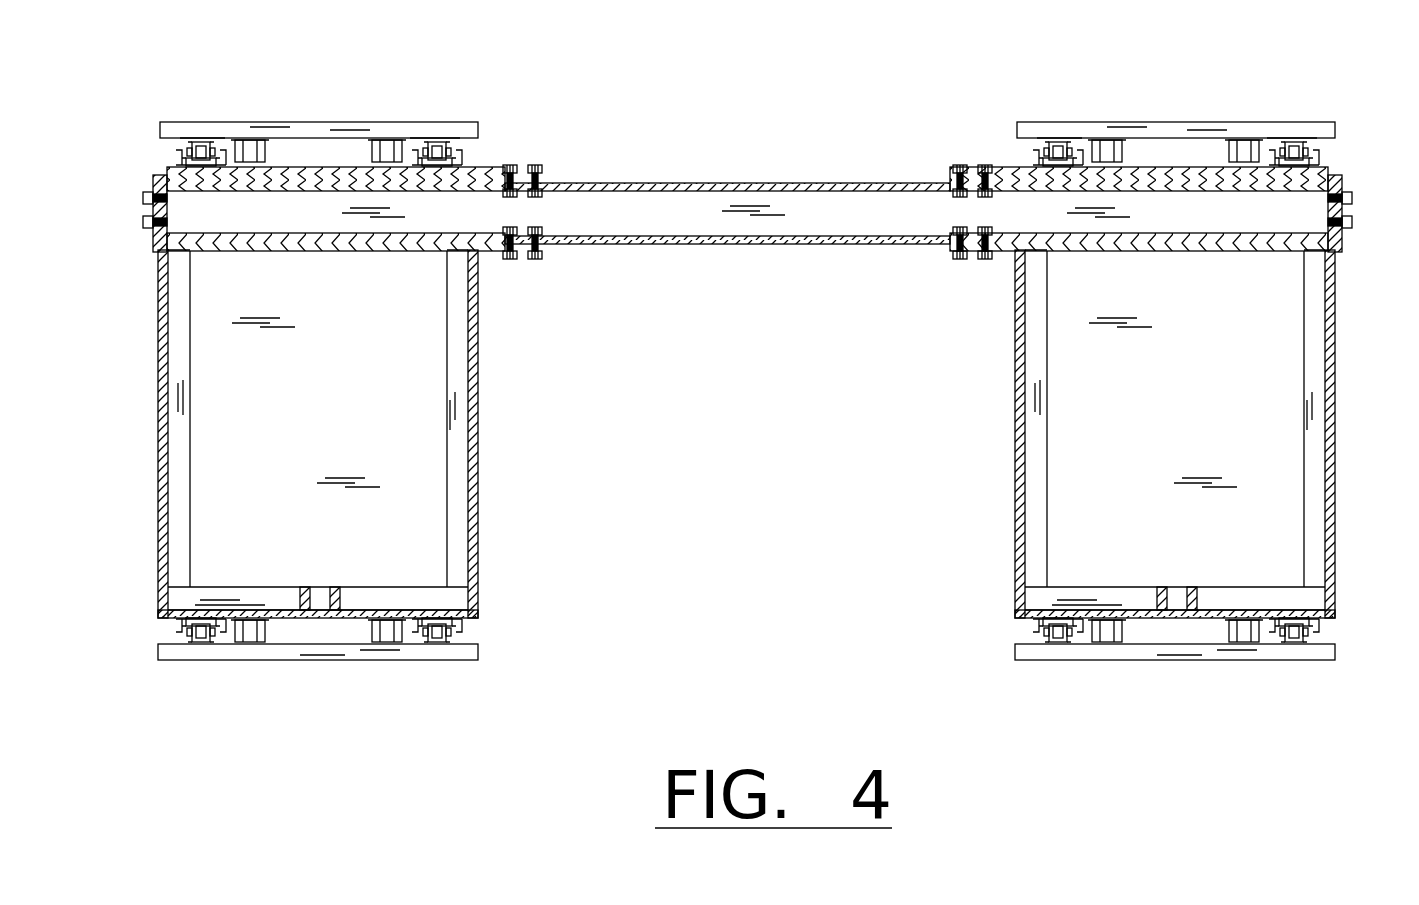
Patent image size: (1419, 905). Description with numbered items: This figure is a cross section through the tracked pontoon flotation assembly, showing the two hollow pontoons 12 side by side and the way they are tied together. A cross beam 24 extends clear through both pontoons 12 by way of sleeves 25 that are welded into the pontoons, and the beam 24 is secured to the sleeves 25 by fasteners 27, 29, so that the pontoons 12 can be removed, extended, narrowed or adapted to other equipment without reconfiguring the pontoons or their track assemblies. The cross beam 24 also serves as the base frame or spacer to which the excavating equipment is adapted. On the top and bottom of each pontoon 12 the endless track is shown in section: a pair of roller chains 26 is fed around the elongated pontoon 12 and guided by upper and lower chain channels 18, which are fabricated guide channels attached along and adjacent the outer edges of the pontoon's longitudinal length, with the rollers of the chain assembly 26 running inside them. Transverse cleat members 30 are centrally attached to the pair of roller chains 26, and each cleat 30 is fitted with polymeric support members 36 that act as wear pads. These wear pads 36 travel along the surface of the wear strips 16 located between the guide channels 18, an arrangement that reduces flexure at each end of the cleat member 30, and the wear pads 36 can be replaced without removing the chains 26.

The pontoon 12 is at (746, 434).
The wear strip 16 is at (746, 648).
The chain channel 18 is at (752, 375).
The cross beam 24 is at (810, 187).
The sleeve 25 is at (490, 255).
The roller chain 26 is at (748, 375).
The fastener 27 is at (535, 167).
The fastener 29 is at (145, 226).
The cleat member 30 is at (785, 401).
The polymeric support member 36 is at (744, 389).